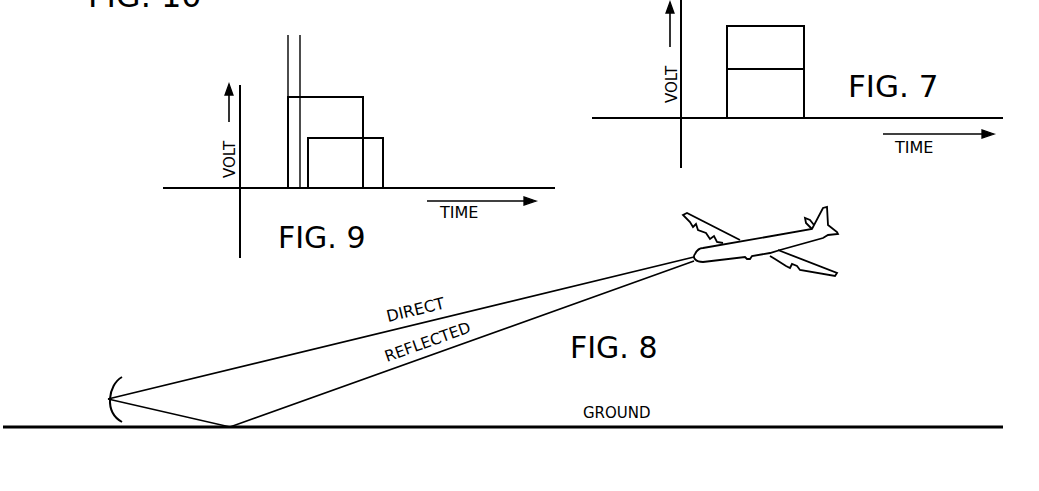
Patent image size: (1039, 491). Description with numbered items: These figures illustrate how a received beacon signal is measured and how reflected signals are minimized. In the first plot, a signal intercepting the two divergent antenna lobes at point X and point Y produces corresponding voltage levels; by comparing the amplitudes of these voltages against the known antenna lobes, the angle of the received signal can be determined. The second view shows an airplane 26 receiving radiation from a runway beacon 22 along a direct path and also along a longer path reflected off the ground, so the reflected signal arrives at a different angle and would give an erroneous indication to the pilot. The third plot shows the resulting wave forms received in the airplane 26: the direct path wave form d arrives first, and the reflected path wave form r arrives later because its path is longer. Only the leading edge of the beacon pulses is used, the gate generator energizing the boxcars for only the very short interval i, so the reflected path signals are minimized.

In FIG. 8, the beacon 22 is at (107, 397).
In FIG. 8, the airplane 26 is at (762, 237).
In FIG. 7, the point X is at (786, 26).
In FIG. 7, the point Y is at (781, 69).
In FIG. 9, the direct path wave form d is at (314, 97).
In FIG. 9, the reflected path wave form r is at (392, 124).
In FIG. 9, the interval i is at (260, 61).